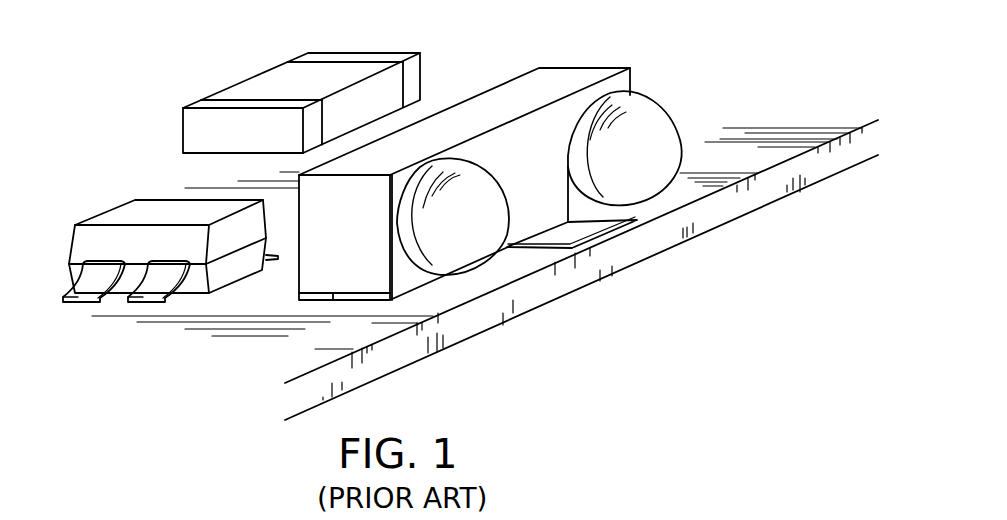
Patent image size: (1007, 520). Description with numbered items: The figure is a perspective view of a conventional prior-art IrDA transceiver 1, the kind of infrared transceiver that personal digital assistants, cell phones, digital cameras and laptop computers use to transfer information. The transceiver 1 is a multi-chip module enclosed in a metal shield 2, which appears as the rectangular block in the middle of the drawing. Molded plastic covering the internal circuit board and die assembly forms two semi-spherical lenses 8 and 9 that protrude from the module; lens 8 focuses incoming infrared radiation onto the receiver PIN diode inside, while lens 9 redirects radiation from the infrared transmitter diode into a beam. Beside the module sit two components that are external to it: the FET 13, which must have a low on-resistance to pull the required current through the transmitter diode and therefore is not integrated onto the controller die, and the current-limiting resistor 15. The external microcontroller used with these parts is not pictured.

The IrDA transceiver 1 is at (609, 36).
The metal shield 2 is at (473, 105).
The semi-spherical lens 8 is at (492, 165).
The semi-spherical lens 9 is at (560, 130).
The FET 13 is at (115, 215).
The current-limiting resistor 15 is at (268, 82).